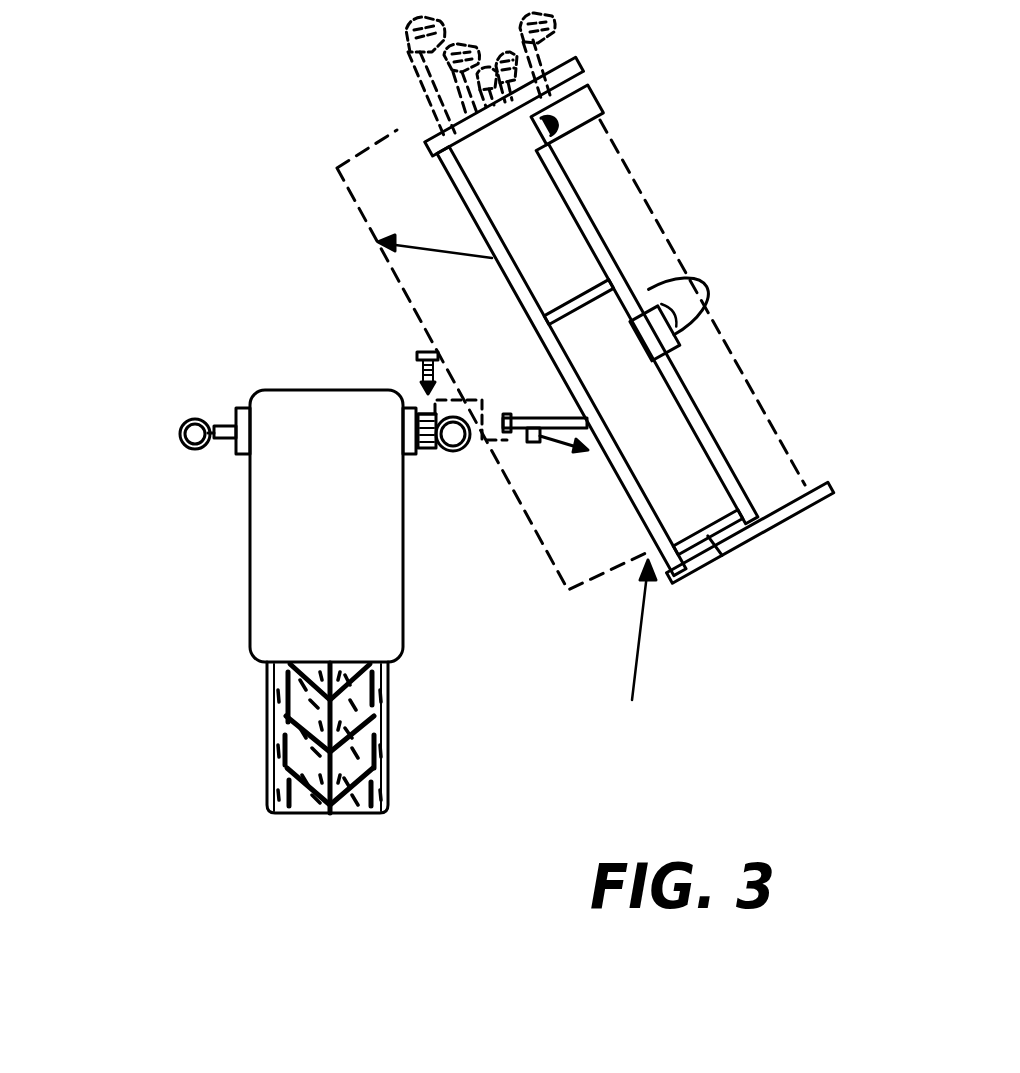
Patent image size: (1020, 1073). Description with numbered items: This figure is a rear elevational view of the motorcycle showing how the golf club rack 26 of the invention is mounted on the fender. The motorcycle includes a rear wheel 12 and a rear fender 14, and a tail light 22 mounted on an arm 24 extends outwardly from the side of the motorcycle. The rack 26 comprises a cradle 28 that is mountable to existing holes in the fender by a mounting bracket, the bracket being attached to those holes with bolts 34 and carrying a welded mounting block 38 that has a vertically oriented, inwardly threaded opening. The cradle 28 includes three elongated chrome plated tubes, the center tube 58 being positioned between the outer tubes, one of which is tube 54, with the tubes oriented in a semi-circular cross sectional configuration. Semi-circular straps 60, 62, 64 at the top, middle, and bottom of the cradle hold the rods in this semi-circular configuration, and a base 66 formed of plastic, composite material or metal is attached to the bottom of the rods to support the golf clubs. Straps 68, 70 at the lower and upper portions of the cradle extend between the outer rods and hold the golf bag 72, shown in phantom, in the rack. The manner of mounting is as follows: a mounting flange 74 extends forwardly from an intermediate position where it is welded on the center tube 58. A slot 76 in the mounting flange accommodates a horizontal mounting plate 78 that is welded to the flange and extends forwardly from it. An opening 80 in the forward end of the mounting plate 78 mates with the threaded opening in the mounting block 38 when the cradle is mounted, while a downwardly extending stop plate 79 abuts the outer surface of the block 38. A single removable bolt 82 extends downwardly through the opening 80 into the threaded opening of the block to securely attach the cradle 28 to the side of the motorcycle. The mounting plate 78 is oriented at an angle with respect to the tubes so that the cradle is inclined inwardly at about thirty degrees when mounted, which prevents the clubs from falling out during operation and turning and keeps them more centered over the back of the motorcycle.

The rear wheel 12 is at (282, 705).
The rear fender 14 is at (265, 505).
The tail light 22 is at (183, 432).
The arm 24 is at (224, 427).
The rack 26 is at (632, 645).
The cradle 28 is at (740, 392).
The bolts 34 is at (424, 455).
The mounting block 38 is at (417, 455).
The tube 54 is at (583, 186).
The tube 58 is at (492, 258).
The semi-circular strap 60 is at (452, 144).
The semi-circular strap 62 is at (695, 270).
The semi-circular strap 64 is at (760, 548).
The base 66 is at (783, 518).
The strap 68 is at (700, 292).
The strap 70 is at (597, 98).
The golf bag 72 is at (668, 227).
The mounting flange 74 is at (574, 446).
The slot 76 is at (547, 435).
The mounting plate 78 is at (535, 417).
The stop plate 79 is at (533, 435).
The opening 80 is at (523, 417).
The bolt 82 is at (418, 355).